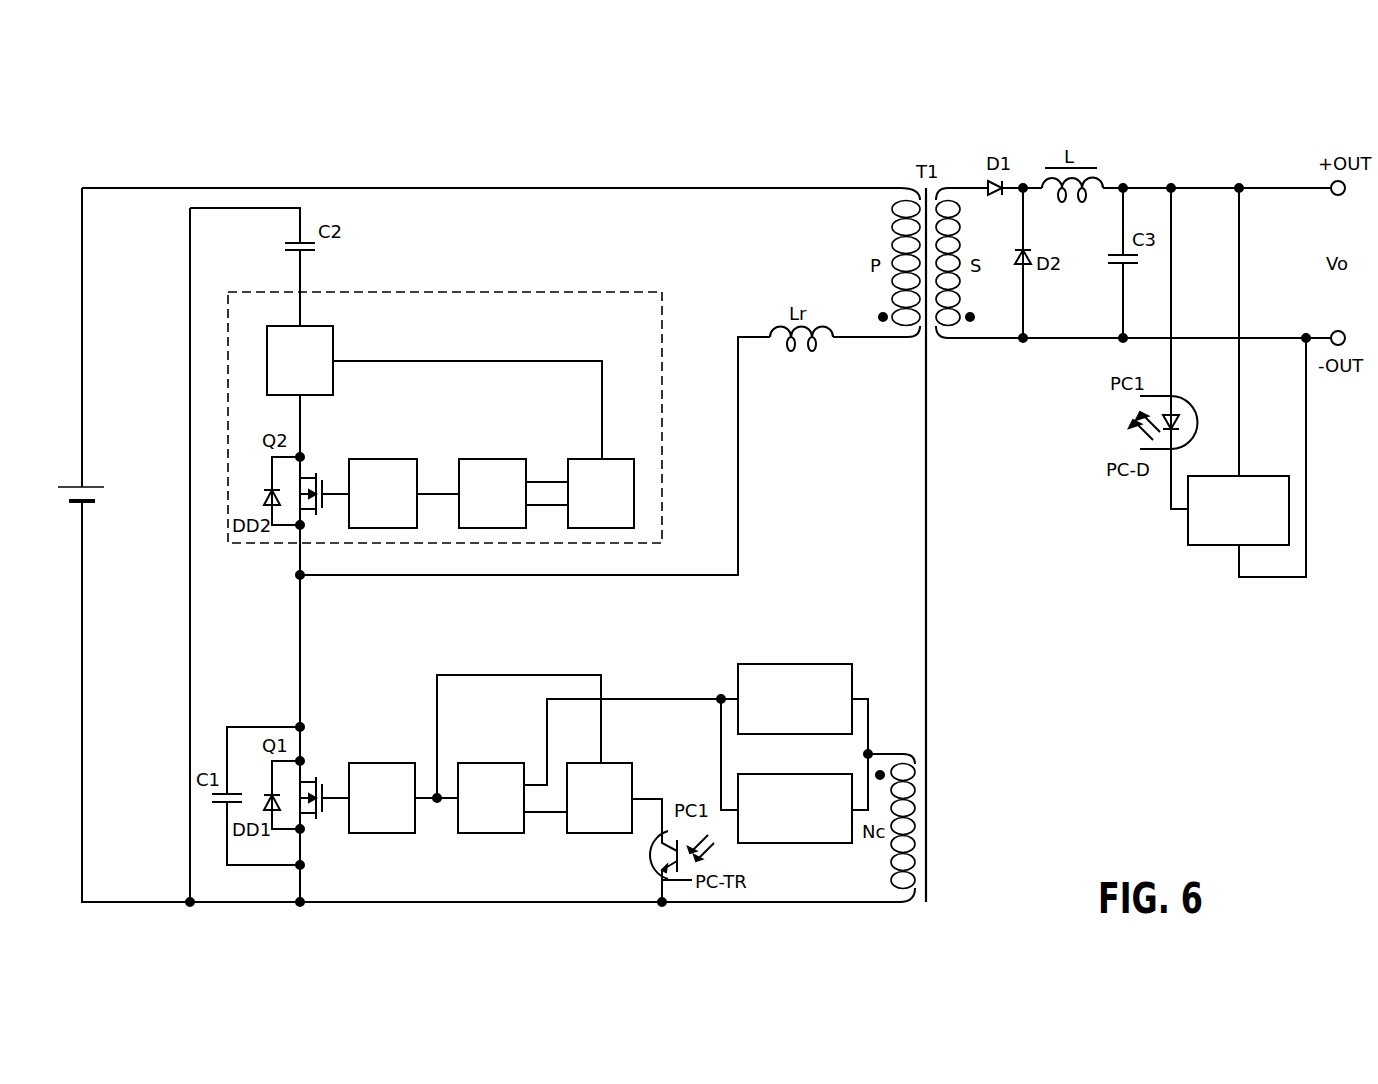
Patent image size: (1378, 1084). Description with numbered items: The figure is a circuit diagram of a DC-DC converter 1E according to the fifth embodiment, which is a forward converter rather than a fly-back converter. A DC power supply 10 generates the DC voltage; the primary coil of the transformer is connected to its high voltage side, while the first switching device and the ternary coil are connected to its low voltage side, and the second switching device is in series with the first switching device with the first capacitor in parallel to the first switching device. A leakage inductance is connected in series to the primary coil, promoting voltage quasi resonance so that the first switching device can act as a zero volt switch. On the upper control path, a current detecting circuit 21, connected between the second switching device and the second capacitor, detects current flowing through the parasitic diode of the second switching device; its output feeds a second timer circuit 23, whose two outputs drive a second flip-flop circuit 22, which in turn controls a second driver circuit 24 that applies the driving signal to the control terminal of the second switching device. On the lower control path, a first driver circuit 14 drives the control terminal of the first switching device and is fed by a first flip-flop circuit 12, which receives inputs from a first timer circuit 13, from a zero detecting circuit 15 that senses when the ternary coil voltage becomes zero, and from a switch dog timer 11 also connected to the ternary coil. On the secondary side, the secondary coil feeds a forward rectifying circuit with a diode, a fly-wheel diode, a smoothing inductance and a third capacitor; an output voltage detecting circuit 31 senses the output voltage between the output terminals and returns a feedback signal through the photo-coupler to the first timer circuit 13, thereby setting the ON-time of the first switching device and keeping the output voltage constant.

The DC-DC converter 1E is at (508, 152).
The DC power supply 10 is at (88, 505).
The switch dog timer 11 is at (818, 774).
The first flip-flop circuit 12 is at (490, 763).
The first timer circuit 13 is at (600, 763).
The first driver circuit 14 is at (380, 763).
The zero detecting circuit 15 is at (818, 664).
The current detecting circuit 21 is at (318, 326).
The second flip-flop circuit 22 is at (490, 459).
The second timer circuit 23 is at (600, 459).
The second driver circuit 24 is at (380, 459).
The output voltage detecting circuit 31 is at (1258, 476).